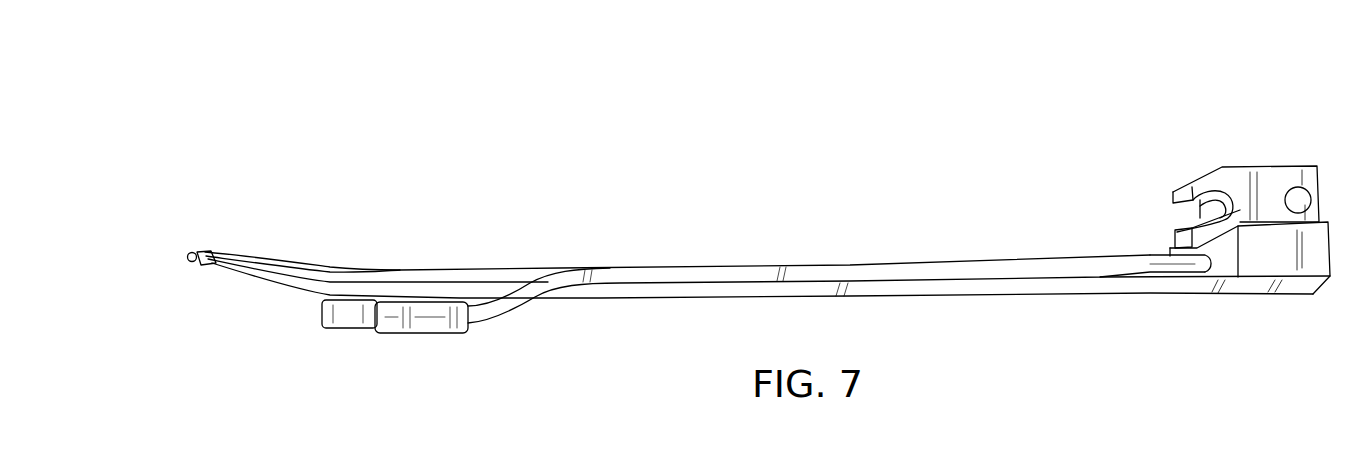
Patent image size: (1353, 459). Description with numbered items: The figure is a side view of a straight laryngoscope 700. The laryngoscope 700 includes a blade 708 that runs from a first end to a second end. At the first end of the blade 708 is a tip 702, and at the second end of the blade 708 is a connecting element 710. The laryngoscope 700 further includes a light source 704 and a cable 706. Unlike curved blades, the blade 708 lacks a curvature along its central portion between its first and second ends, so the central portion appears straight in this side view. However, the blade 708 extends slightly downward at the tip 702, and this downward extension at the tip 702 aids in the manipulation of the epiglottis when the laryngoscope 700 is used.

The laryngoscope 700 is at (528, 106).
The tip 702 is at (189, 250).
The light source 704 is at (351, 334).
The cable 706 is at (649, 267).
The blade 708 is at (940, 302).
The connecting element 710 is at (1169, 192).